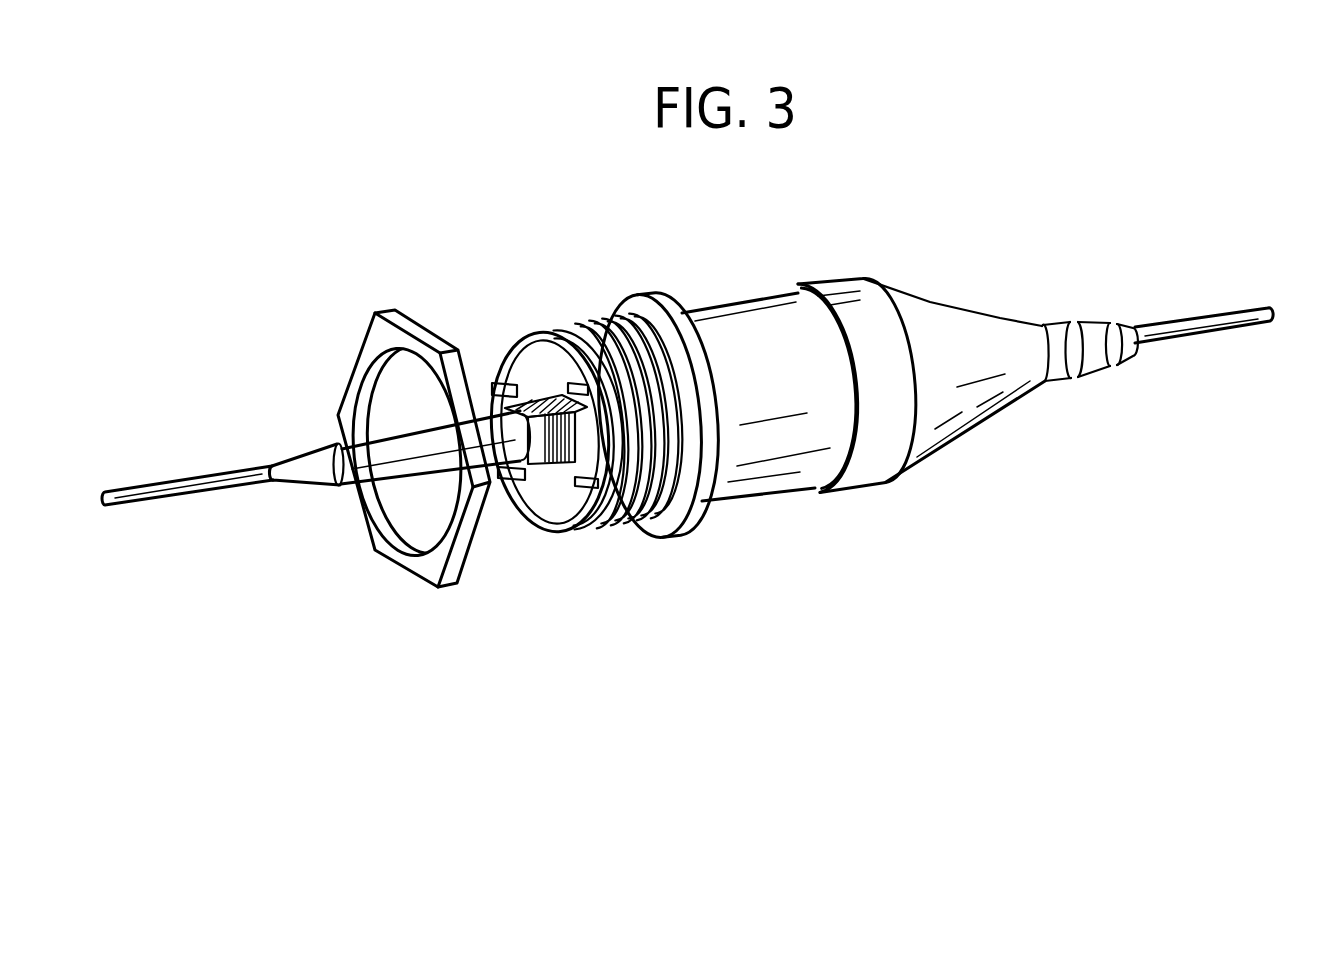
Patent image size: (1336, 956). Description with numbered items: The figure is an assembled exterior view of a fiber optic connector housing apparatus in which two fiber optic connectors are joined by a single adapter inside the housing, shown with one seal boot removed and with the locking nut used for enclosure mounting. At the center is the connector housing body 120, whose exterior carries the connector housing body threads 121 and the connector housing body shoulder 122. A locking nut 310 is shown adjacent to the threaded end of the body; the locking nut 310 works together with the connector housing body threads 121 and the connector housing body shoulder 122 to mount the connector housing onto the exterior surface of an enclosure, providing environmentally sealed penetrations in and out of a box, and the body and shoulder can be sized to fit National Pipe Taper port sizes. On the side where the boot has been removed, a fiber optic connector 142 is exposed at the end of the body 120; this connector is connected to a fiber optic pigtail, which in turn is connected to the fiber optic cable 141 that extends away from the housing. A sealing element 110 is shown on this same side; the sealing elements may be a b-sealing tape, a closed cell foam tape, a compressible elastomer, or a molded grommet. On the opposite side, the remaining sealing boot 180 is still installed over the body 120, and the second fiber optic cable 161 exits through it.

The sealing element 110 is at (315, 477).
The connector housing body 120 is at (713, 313).
The connector housing body threads 121 is at (627, 523).
The connector housing body shoulder 122 is at (710, 505).
The fiber optic cable 141 is at (215, 487).
The fiber optic connector 142 is at (520, 508).
The fiber optic cable 161 is at (1200, 333).
The sealing boot 180 is at (957, 303).
The locking nut 310 is at (358, 347).